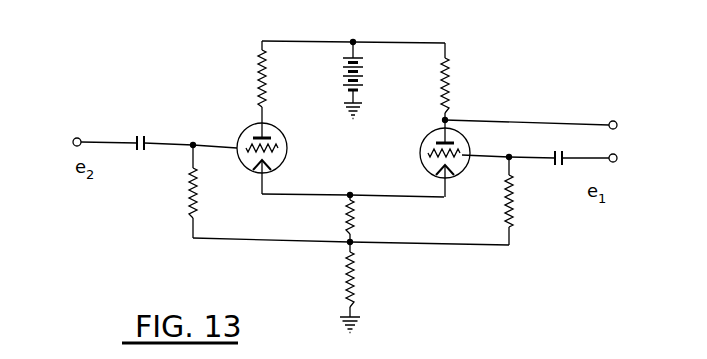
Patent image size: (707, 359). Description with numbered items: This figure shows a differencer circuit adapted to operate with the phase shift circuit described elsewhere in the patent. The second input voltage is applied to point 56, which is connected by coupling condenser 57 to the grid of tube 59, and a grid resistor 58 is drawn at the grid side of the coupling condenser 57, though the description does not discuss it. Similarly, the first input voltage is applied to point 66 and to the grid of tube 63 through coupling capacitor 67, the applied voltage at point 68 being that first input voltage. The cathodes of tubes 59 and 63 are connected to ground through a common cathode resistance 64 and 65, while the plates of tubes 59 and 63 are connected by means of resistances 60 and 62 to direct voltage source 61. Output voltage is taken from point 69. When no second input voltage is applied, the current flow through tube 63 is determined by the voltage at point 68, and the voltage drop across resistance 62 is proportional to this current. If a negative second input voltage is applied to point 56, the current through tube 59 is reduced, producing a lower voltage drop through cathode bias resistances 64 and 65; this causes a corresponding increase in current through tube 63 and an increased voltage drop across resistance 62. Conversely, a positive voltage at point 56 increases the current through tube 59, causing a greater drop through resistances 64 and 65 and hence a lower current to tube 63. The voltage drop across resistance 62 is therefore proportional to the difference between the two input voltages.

The point 56 is at (78, 138).
The coupling condenser 57 is at (137, 135).
The grid resistor 58 is at (191, 181).
The tube 59 is at (270, 128).
The resistance 60 is at (258, 70).
The direct voltage source 61 is at (362, 82).
The resistance 62 is at (450, 86).
The tube 63 is at (430, 132).
The cathode resistance 64 is at (365, 218).
The cathode resistance 65 is at (353, 293).
The point 66 is at (512, 218).
The coupling capacitor 67 is at (557, 168).
The point 68 is at (614, 163).
The point 69 is at (614, 121).